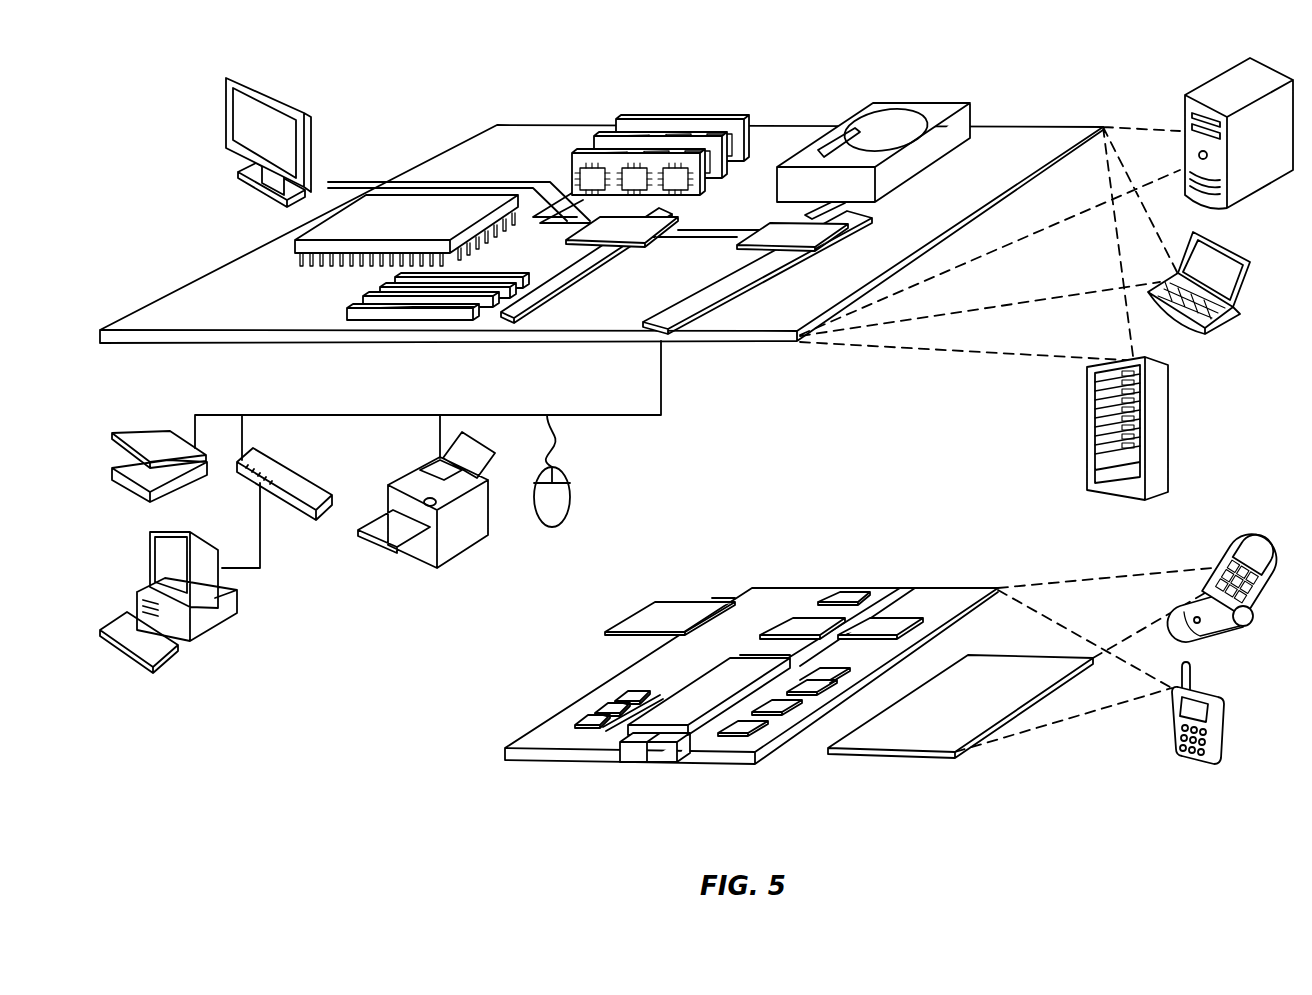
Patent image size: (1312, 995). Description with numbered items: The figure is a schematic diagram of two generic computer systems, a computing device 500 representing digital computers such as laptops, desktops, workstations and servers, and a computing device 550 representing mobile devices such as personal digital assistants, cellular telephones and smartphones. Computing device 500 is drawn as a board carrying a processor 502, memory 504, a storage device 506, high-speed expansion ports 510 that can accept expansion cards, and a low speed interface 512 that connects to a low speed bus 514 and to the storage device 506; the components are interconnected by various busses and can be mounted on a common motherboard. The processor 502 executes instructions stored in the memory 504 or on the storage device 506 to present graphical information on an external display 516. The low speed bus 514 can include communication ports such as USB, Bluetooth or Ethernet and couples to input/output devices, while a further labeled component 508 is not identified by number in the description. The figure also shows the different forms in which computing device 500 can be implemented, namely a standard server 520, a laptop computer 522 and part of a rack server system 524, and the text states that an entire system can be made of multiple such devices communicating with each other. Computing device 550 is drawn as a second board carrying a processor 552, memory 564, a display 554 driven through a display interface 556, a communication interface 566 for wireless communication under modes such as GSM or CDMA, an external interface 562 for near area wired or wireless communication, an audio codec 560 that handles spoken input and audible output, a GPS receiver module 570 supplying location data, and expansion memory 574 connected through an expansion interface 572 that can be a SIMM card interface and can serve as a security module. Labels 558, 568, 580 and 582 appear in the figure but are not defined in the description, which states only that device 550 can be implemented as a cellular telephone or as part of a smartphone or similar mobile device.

The computing device 500 is at (423, 97).
The processor 502 is at (303, 247).
The memory 504 is at (632, 118).
The storage device 506 is at (862, 105).
The chipset 508 is at (598, 230).
The high-speed expansion ports 510 is at (373, 302).
The low speed interface 512 is at (772, 233).
The low speed bus 514 is at (672, 328).
The display 516 is at (230, 72).
The standard server 520 is at (1182, 112).
The laptop computer 522 is at (1255, 263).
The rack server system 524 is at (1083, 452).
The computing device 550 is at (490, 760).
The processor 552 is at (682, 717).
The display 554 is at (922, 737).
The display interface 556 is at (753, 723).
The memory chip 558 is at (785, 703).
The audio codec 560 is at (812, 682).
The external interface 562 is at (645, 745).
The memory 564 is at (587, 712).
The communication interface 566 is at (803, 623).
The radio module 568 is at (883, 627).
The GPS receiver module 570 is at (855, 592).
The expansion interface 572 is at (715, 597).
The expansion memory 574 is at (655, 604).
The cellular phone 580 is at (1220, 532).
The mobile phone 582 is at (1170, 720).